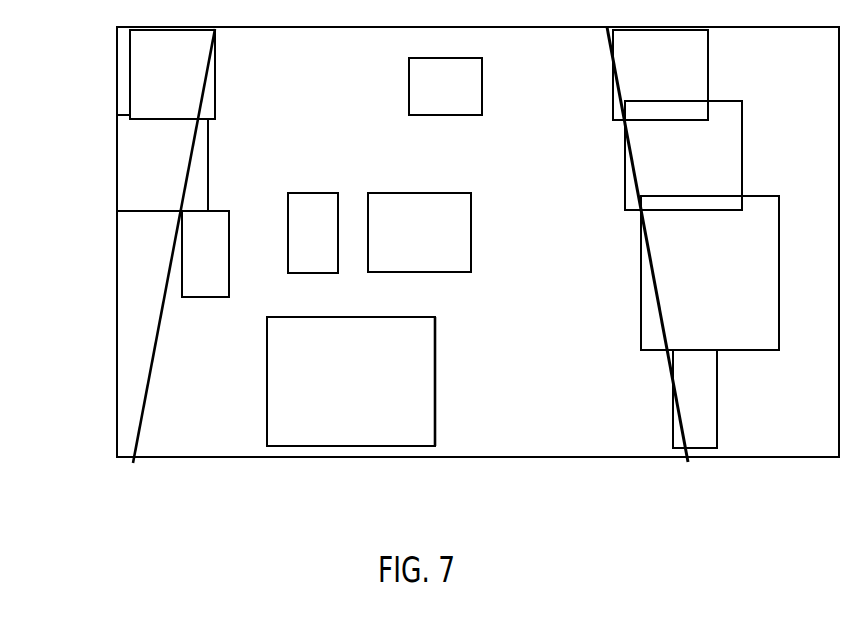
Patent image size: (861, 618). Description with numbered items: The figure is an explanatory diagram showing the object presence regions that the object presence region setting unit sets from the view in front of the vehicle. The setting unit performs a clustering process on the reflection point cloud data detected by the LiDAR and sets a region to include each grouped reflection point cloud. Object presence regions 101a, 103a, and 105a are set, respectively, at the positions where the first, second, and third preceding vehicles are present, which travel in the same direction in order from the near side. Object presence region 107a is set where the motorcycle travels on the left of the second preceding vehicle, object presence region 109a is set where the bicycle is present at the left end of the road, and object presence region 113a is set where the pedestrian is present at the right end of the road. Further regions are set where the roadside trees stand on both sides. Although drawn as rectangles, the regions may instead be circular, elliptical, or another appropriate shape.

The object presence region 101a is at (400, 352).
The object presence region 103a is at (443, 220).
The object presence region 105a is at (463, 83).
The object presence region 107a is at (320, 212).
The object presence region 109a is at (218, 217).
The object presence region 113a is at (696, 443).